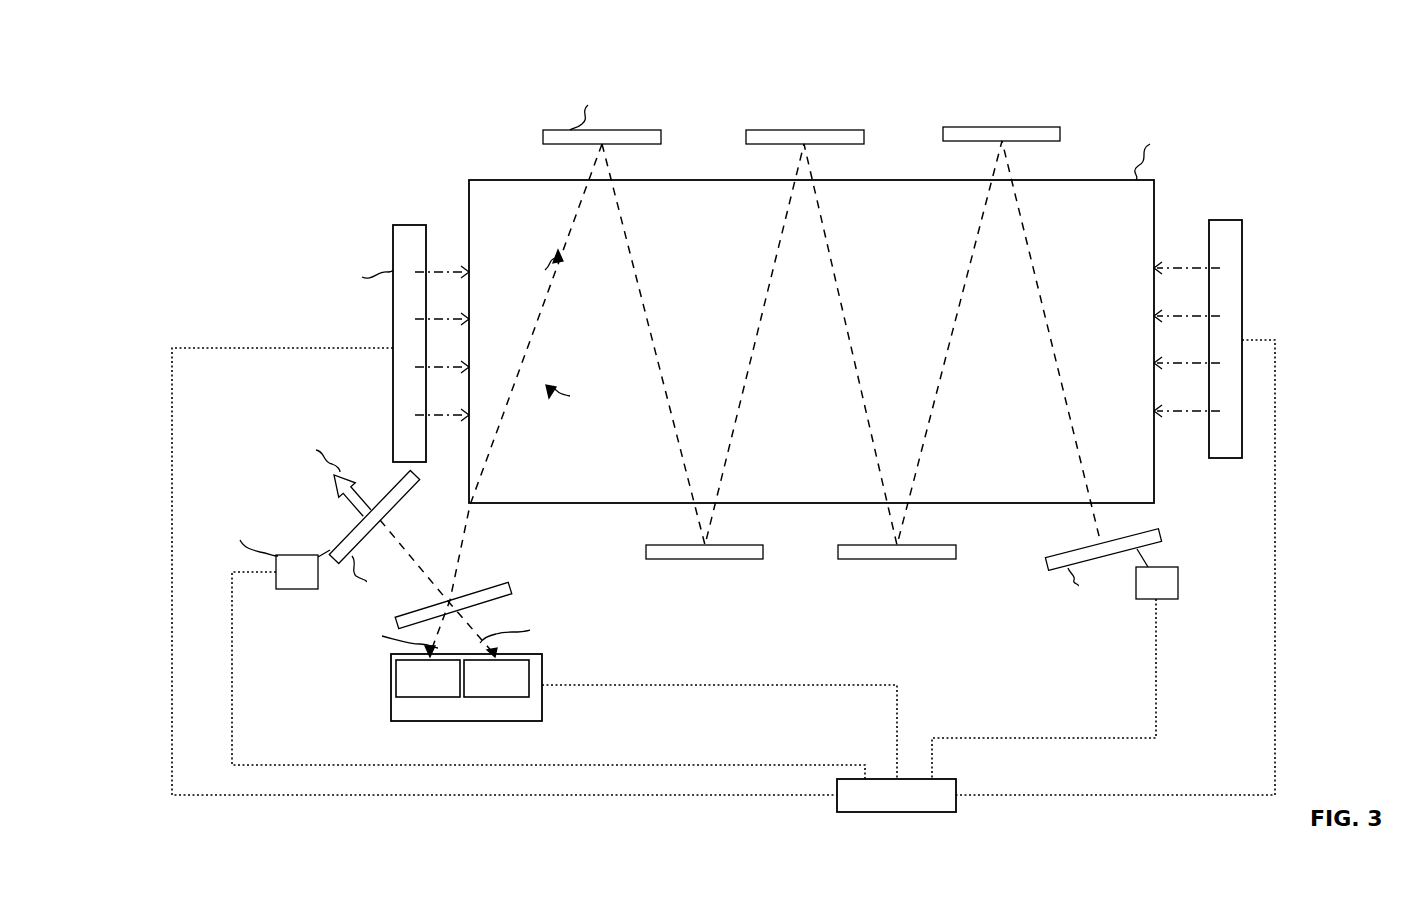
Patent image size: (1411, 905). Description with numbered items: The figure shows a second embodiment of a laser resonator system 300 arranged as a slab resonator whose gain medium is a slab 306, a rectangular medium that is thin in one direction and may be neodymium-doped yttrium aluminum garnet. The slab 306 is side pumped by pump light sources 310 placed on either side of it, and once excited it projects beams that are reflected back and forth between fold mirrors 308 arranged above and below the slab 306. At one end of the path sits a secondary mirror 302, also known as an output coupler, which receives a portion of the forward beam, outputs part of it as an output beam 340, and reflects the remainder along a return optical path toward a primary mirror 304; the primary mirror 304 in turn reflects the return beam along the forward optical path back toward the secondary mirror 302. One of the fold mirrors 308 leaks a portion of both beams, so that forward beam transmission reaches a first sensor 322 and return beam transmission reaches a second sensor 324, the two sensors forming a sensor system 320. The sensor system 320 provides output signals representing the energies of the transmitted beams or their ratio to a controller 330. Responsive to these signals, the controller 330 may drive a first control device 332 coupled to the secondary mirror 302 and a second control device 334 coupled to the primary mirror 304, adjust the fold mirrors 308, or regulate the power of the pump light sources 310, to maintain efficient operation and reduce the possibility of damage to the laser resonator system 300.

The laser resonator system 300 is at (252, 82).
The secondary mirror 302 is at (343, 542).
The primary mirror 304 is at (1160, 536).
The slab 306 is at (773, 391).
The fold mirrors 308 is at (656, 130).
The pump light sources 310 is at (393, 225).
The sensor system 320 is at (586, 692).
The first sensor 322 is at (396, 672).
The second sensor 324 is at (542, 676).
The controller 330 is at (896, 812).
The first control device 332 is at (531, 642).
The second control device 334 is at (1055, 664).
The output beam 340 is at (338, 488).